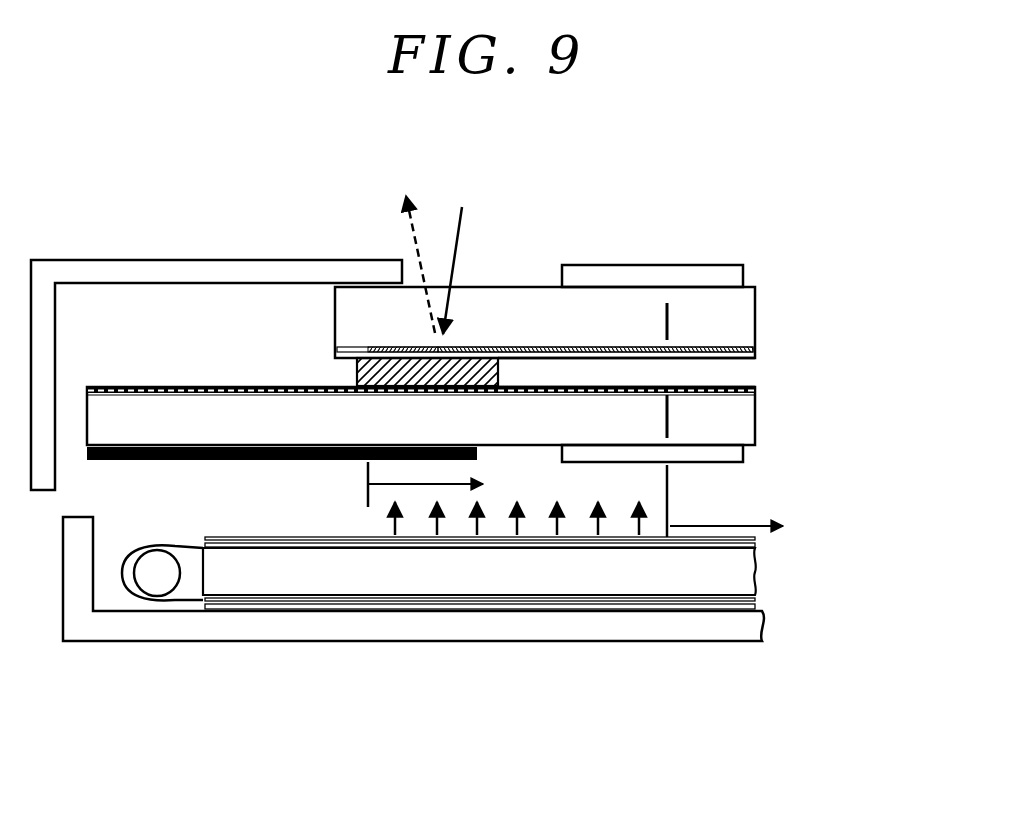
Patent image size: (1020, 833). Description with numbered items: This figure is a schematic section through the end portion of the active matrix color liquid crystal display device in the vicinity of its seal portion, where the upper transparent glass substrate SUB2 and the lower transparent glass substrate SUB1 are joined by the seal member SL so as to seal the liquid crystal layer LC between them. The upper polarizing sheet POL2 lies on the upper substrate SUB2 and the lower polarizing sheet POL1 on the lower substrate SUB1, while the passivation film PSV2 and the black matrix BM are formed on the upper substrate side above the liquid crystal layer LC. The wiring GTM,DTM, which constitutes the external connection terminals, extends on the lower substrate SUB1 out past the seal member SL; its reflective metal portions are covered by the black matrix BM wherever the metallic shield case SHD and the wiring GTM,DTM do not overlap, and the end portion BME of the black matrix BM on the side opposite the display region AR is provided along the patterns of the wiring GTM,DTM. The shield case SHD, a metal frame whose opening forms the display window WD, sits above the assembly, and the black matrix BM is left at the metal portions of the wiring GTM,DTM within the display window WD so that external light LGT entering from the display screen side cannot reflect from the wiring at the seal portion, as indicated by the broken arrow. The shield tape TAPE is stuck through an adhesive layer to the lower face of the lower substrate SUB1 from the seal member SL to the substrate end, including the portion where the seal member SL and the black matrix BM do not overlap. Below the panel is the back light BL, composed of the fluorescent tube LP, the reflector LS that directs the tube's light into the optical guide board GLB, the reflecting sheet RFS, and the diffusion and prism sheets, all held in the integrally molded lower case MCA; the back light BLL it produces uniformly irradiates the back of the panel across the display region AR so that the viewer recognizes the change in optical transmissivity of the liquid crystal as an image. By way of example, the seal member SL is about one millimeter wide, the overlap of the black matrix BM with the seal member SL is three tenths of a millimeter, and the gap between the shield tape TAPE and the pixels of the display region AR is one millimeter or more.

The shield case SHD is at (255, 260).
The upper transparent glass substrate SUB2 is at (743, 305).
The polarizing sheet POL2 is at (675, 265).
The passivation film PSV2 is at (750, 358).
The end portion of the black matrix BME is at (400, 347).
The black matrix BM is at (557, 343).
The display window WD is at (410, 262).
The external light LGT is at (467, 252).
The seal member SL is at (417, 400).
The liquid crystal layer LC is at (601, 378).
The lower transparent glass substrate SUB1 is at (750, 398).
The wiring GTM,DTM is at (187, 387).
The polarizing sheet POL1 is at (680, 462).
The shield tape TAPE is at (290, 460).
The back light BLL is at (503, 498).
The matrix portion AR is at (751, 528).
The back light BL is at (496, 622).
The optical guide board GLB is at (748, 573).
The reflecting sheet RFS is at (755, 605).
The reflector LS is at (173, 600).
The fluorescent tube LP is at (147, 585).
The lower case MCA is at (760, 625).